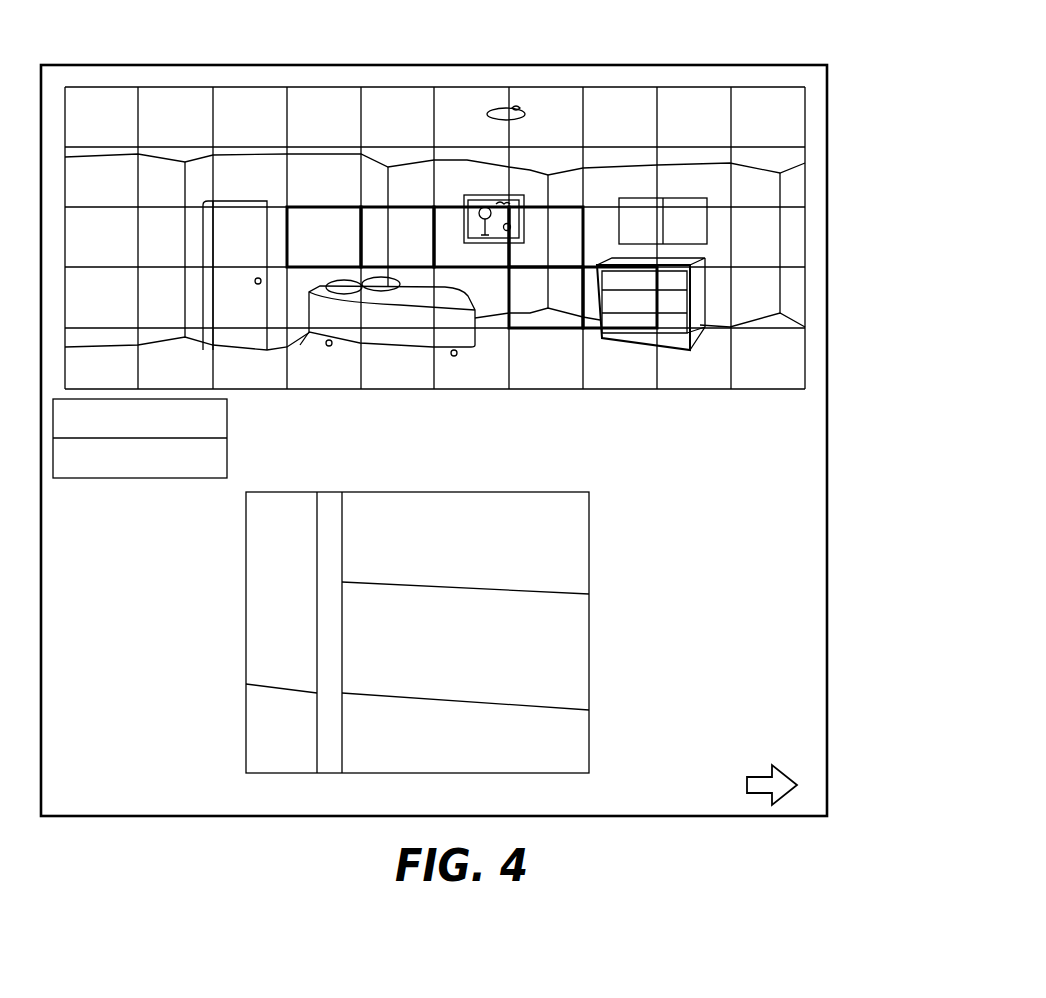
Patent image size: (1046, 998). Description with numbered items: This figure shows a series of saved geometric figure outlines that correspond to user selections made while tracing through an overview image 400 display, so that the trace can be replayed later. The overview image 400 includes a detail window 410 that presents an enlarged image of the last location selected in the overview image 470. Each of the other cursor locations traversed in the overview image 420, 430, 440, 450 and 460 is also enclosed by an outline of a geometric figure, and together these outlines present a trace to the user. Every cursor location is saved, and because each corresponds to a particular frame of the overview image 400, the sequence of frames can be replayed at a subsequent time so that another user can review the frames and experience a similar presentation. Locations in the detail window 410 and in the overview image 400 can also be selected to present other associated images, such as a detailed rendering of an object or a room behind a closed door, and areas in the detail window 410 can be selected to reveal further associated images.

The overview image 400 is at (807, 236).
The detail window 410 is at (589, 657).
The cursor location 420 is at (333, 228).
The cursor location 430 is at (407, 228).
The cursor location 440 is at (453, 222).
The cursor location 450 is at (566, 222).
The cursor location 460 is at (545, 333).
The last selected location 470 is at (614, 322).